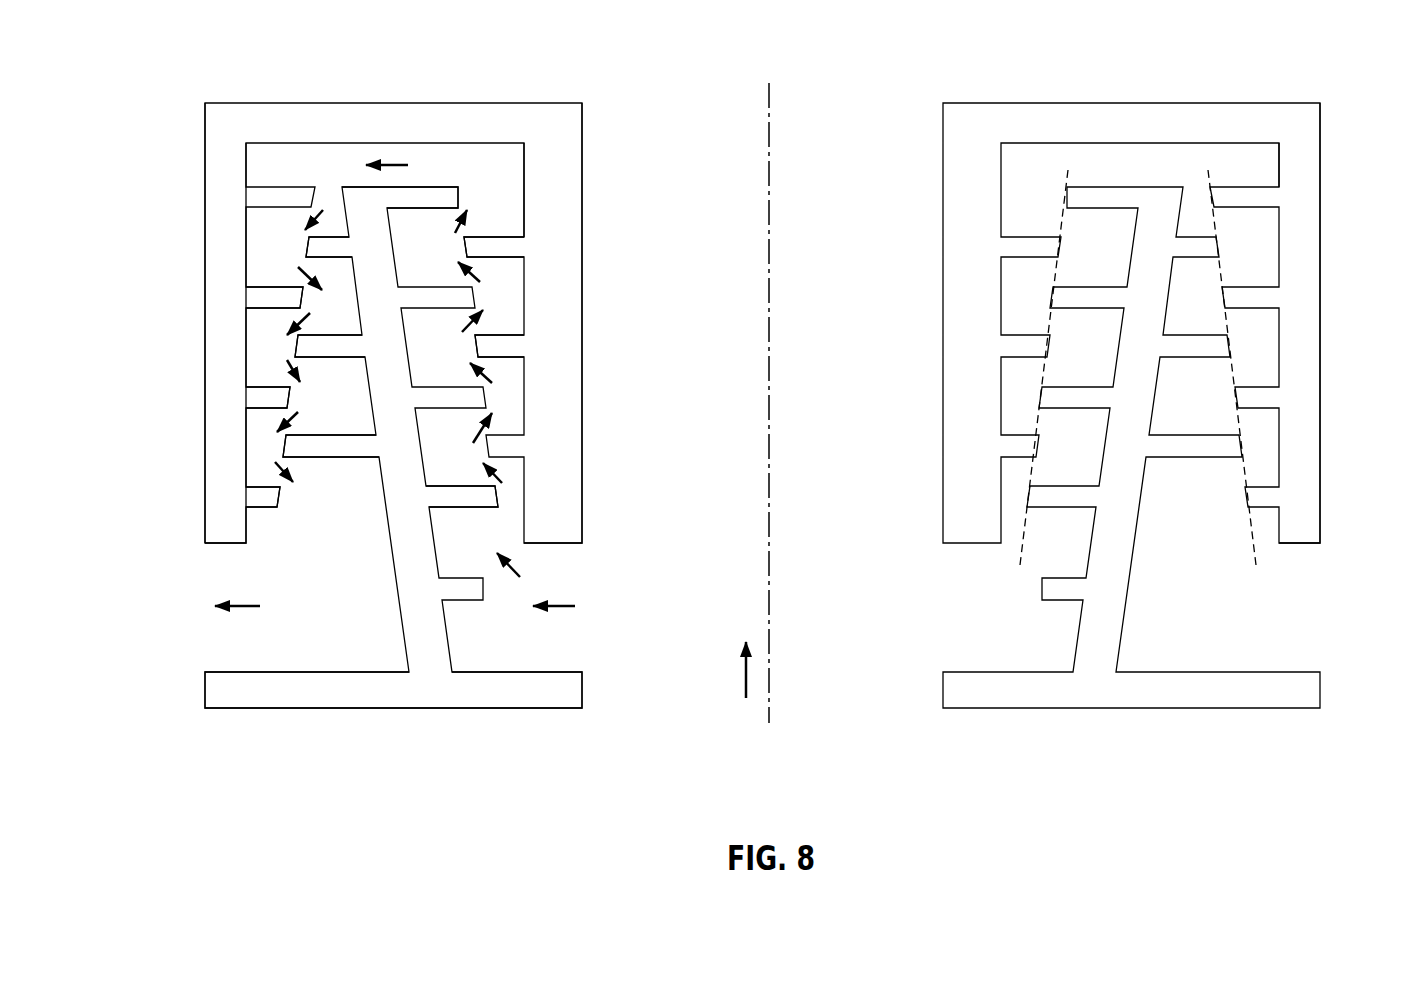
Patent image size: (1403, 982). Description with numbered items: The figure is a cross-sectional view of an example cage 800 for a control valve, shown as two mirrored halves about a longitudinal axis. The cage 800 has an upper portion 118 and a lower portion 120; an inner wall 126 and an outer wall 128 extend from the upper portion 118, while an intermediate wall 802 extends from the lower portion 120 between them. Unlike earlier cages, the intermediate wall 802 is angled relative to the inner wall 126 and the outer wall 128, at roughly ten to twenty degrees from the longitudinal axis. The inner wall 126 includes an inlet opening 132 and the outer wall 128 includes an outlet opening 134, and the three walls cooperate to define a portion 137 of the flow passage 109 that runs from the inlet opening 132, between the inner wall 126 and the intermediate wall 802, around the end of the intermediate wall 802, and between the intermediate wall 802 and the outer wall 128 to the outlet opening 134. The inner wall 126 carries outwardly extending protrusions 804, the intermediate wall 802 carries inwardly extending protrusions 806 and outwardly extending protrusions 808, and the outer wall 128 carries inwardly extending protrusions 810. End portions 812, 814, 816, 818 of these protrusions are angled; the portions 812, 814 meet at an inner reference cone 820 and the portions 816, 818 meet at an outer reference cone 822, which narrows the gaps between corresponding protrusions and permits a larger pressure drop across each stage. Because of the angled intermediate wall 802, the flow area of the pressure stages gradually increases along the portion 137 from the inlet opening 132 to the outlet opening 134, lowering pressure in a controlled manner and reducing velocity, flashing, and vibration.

The cage 800 is at (200, 40).
The upper portion 118 is at (228, 120).
The lower portion 120 is at (217, 692).
The inner wall 126 is at (953, 240).
The outer wall 128 is at (1308, 167).
The inlet opening 132 is at (568, 532).
The outlet opening 134 is at (227, 535).
The portion of the flow passage 137 is at (270, 350).
The flow passage 109 is at (265, 473).
The intermediate wall 802 is at (413, 622).
The outwardly extending protrusions 804 is at (490, 348).
The inwardly extending protrusions 806 is at (483, 495).
The outwardly extending protrusions 808 is at (330, 248).
The inwardly extending protrusions 810 is at (270, 297).
The angled end portion 812 is at (465, 247).
The angled end portion 814 is at (460, 198).
The angled end portion 816 is at (283, 447).
The angled end portion 818 is at (288, 402).
The inner reference cone 820 is at (1025, 558).
The outer reference cone 822 is at (1253, 562).